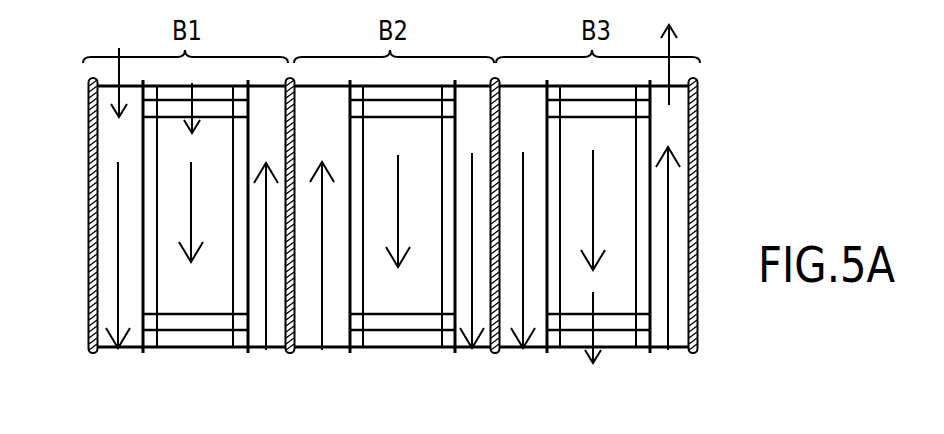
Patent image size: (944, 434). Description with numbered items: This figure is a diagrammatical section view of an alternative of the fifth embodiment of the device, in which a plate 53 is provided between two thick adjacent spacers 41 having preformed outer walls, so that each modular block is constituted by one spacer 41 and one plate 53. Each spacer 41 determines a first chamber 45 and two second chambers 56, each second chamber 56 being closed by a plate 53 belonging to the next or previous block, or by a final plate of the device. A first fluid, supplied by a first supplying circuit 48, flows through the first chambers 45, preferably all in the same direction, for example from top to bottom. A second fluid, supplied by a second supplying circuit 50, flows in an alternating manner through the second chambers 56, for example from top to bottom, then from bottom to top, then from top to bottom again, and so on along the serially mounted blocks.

The thick spacer 41 is at (621, 378).
The first chamber 45 is at (628, 173).
The first supplying circuit 48 is at (586, 396).
The second supplying circuit 50 is at (707, 30).
The plate 53 is at (710, 387).
The second chamber 56 is at (676, 336).